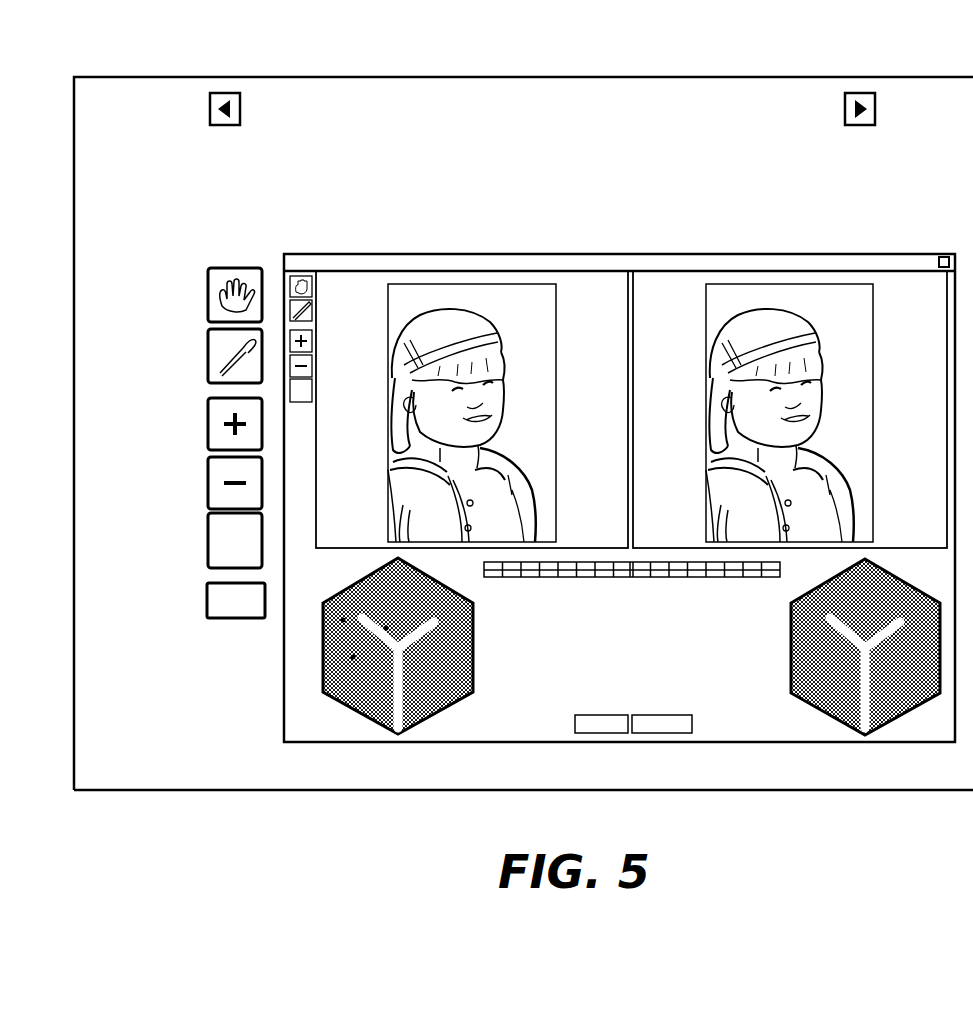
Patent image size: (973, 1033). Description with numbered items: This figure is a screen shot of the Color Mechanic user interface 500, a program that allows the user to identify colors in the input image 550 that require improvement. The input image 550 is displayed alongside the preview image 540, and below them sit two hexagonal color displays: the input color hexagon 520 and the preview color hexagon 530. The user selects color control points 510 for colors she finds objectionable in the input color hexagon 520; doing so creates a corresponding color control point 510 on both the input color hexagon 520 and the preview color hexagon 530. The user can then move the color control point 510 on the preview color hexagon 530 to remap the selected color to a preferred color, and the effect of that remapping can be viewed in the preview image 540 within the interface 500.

The color mechanic user interface 500 is at (526, 53).
The color control points 510 is at (353, 657).
The input color hexagon 520 is at (432, 817).
The preview color hexagon 530 is at (828, 718).
The preview image 540 is at (797, 284).
The input image 550 is at (476, 284).